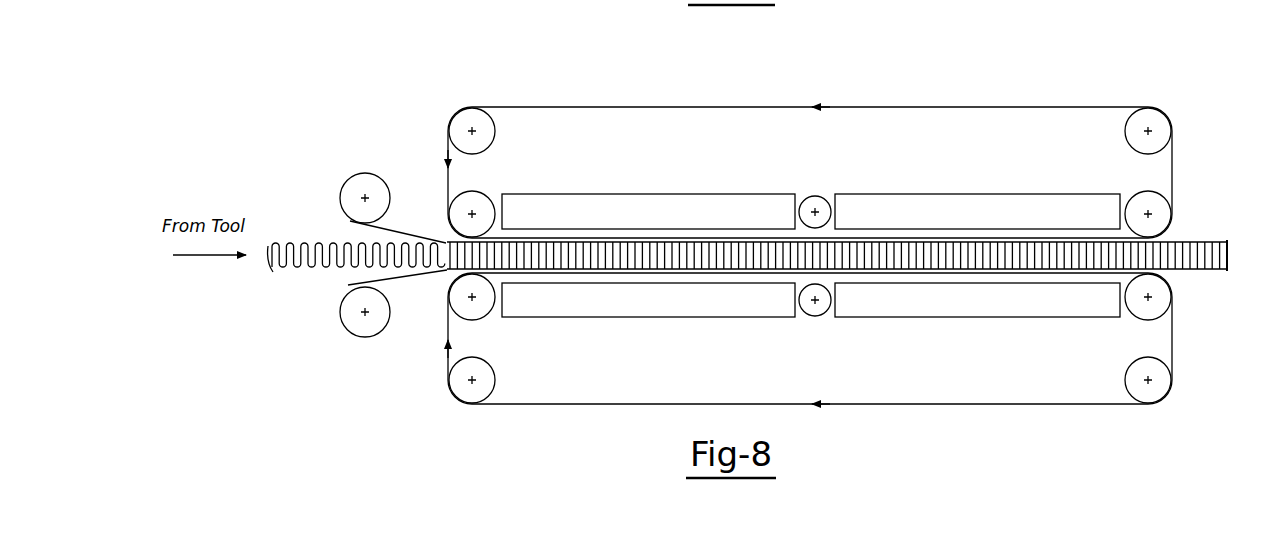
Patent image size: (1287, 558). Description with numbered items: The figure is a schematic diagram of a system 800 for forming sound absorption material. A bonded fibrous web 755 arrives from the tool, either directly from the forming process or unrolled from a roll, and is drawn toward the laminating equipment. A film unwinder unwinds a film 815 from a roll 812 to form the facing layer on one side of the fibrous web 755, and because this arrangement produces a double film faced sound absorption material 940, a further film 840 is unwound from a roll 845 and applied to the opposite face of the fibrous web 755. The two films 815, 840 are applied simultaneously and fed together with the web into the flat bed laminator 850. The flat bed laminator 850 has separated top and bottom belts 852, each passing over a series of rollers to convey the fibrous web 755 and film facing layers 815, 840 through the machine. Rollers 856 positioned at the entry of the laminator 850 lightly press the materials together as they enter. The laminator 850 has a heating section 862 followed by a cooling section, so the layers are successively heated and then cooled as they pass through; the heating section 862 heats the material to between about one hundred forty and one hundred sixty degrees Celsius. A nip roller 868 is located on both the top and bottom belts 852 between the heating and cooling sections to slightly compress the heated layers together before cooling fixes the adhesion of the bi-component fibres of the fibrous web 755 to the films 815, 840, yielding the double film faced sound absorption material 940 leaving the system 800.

The system 800 is at (559, 80).
The flat bed laminator 850 is at (894, 98).
The heating section 862 is at (566, 415).
The belts 852 is at (602, 106).
The rollers 856 is at (480, 195).
The nip roller 868 is at (813, 196).
The roll 845 is at (367, 173).
The roll 812 is at (367, 337).
The film 840 is at (402, 228).
The film 815 is at (400, 277).
The bonded fibrous web 755 is at (295, 242).
The double film faced sound absorption material 940 is at (1231, 230).